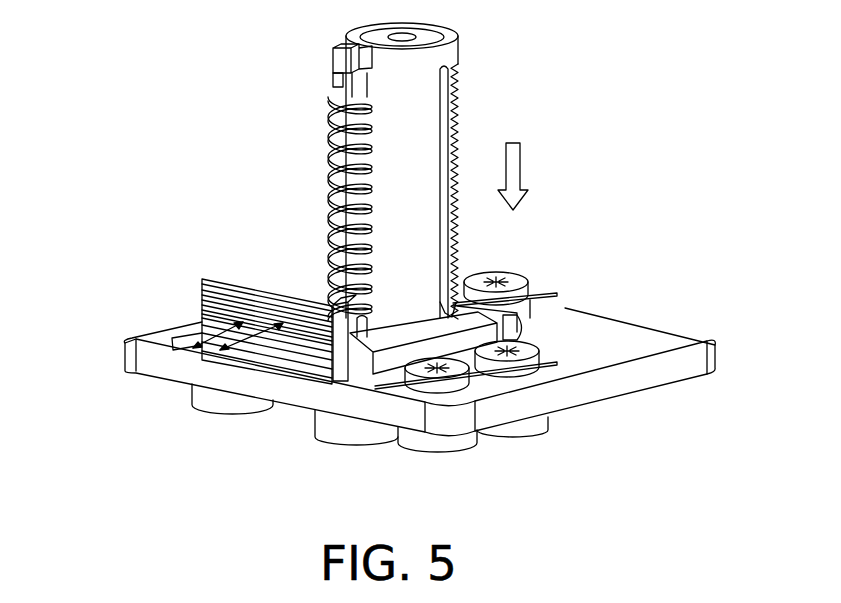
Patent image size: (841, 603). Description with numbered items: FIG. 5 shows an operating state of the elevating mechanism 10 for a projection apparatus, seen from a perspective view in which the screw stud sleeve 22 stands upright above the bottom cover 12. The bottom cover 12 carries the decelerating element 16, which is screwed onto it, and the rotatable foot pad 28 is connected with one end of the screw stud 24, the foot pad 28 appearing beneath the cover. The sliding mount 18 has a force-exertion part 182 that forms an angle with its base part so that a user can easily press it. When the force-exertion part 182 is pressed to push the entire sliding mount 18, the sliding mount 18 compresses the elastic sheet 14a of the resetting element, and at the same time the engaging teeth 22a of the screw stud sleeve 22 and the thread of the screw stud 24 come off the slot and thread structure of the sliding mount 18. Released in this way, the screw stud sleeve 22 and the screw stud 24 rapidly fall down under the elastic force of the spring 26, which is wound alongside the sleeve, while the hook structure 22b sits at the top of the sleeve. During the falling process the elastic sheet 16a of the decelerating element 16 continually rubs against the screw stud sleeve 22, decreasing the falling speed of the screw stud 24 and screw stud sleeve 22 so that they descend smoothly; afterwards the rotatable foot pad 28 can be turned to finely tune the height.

The elevating mechanism 10 is at (60, 81).
The bottom cover 12 is at (605, 390).
The elastic sheet 14a is at (523, 333).
The decelerating element 16 is at (367, 368).
The elastic sheet 16a is at (444, 300).
The sliding mount 18 is at (209, 276).
The force-exertion part 182 is at (263, 362).
The screw stud sleeve 22 is at (462, 48).
The engaging teeth 22a is at (456, 135).
The hook structure 22b is at (334, 62).
The screw stud 24 is at (356, 38).
The spring 26 is at (327, 184).
The rotatable foot pad 28 is at (352, 447).